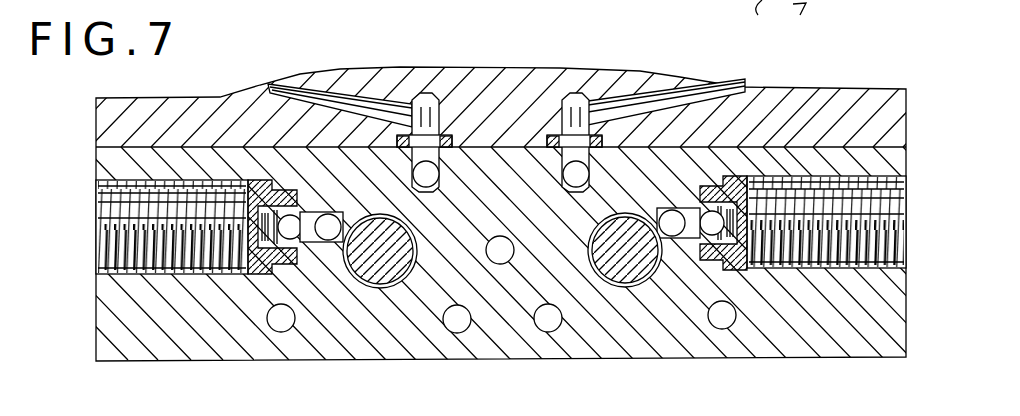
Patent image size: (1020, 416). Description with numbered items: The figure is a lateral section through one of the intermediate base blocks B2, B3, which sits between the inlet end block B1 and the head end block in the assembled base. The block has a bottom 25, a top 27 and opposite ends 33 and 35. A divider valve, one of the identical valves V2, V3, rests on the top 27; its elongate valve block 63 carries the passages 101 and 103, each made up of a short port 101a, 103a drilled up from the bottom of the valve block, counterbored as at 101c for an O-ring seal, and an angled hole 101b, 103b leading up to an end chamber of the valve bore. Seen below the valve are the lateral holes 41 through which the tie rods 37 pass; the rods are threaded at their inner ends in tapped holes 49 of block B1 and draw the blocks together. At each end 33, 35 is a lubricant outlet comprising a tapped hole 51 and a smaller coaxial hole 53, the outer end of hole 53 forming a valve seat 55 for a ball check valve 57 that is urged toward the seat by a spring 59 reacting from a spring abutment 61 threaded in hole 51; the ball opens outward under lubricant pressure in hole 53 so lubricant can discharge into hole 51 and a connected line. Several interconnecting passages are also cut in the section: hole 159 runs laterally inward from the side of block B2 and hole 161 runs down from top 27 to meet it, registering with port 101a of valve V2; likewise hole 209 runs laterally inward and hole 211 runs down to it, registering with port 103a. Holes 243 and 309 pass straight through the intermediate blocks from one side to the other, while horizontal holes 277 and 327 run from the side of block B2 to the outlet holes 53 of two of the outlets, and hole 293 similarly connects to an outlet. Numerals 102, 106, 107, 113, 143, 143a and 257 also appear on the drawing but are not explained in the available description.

The top 27 is at (112, 148).
The bottom 25 is at (470, 330).
The end 33 is at (96, 288).
The end 35 is at (910, 303).
The tie rod 37 is at (632, 287).
The hole 41 is at (385, 290).
The tapped hole 49 is at (538, 6).
The tapped hole 51 is at (152, 276).
The smaller hole 53 is at (672, 238).
The valve seat 55 is at (322, 214).
The ball check valve 57 is at (299, 205).
The spring 59 is at (228, 272).
The spring abutment 61 is at (231, 276).
The valve block 63 is at (328, 242).
The passage 101 is at (365, 86).
The port 101a is at (426, 104).
The angled hole 101b is at (274, 87).
The cam surface 101c is at (446, 118).
The threaded port 102 is at (116, 214).
The passage 103 is at (628, 82).
The port 103a is at (570, 107).
The angled hole 103b is at (714, 86).
The port 106 is at (907, 207).
The port 107 is at (919, 158).
The passage 113 is at (608, 6).
The passage 143 is at (497, 266).
The passage branch 143a is at (544, 6).
The hole 159 is at (418, 168).
The hole 161 is at (482, 160).
The hole 209 is at (525, 155).
The hole 211 is at (600, 130).
The hole 243 is at (457, 334).
The passage 257 is at (722, 330).
The horizontal hole 277 is at (343, 265).
The hole 293 is at (548, 333).
The hole 309 is at (281, 334).
The horizontal hole 327 is at (678, 75).
The inlet end block B1 is at (187, 6).
The intermediate block B2 is at (90, 310).
The intermediate block B3 is at (378, 290).
The divider valve V2 is at (150, 96).
The divider valve V3 is at (574, 142).